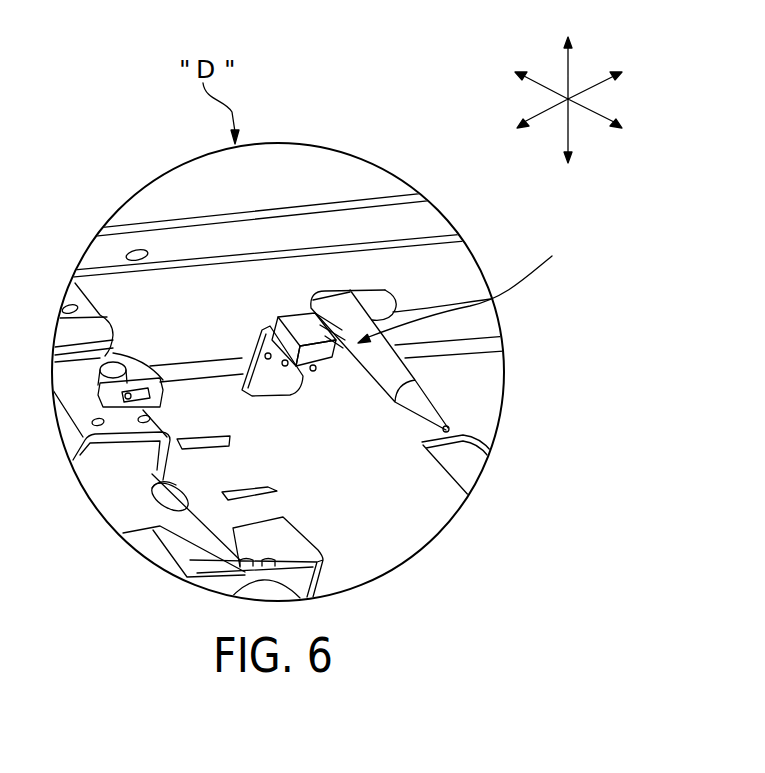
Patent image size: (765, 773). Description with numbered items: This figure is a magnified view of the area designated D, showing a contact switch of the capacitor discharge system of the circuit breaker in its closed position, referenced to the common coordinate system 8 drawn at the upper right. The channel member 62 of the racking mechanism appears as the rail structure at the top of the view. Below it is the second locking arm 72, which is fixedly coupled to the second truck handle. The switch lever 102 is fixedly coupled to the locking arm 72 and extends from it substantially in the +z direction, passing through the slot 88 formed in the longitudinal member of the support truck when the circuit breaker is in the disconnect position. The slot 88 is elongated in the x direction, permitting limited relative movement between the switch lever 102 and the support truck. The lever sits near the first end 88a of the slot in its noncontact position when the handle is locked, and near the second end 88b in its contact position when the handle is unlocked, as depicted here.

The channel member 62 is at (177, 237).
The second locking arm 72 is at (188, 333).
The slot 88 is at (382, 291).
The first end of the slot 88a is at (372, 300).
The second end of the slot 88b is at (307, 313).
The switch lever 102 is at (478, 294).
The coordinate system 8 is at (582, 73).